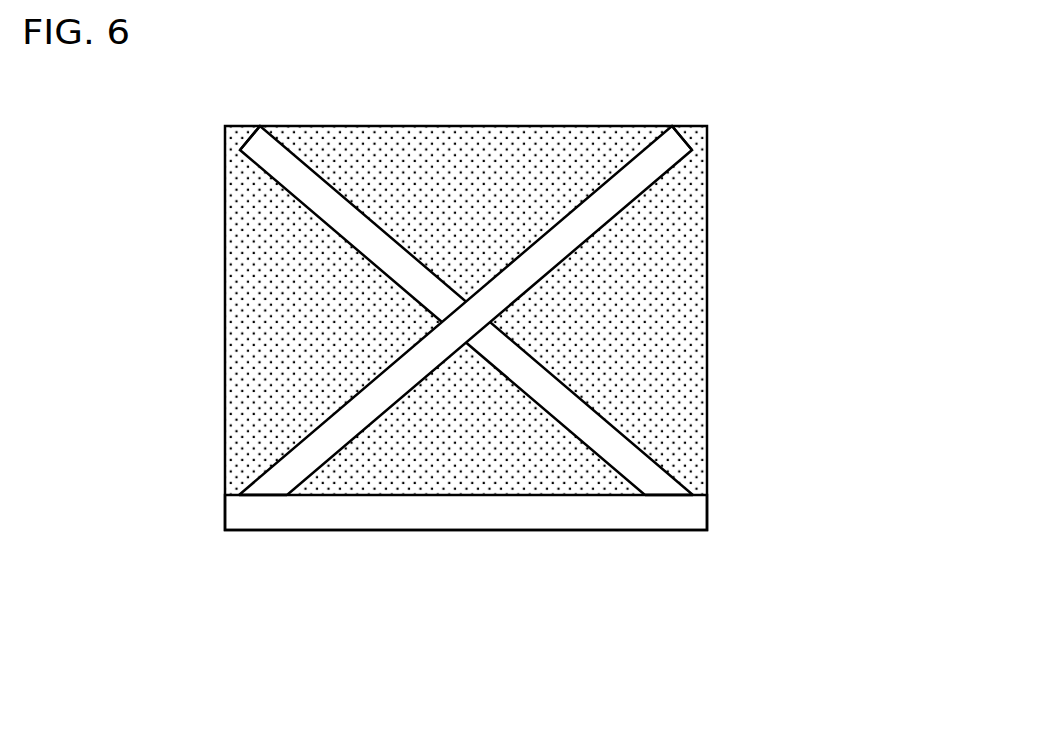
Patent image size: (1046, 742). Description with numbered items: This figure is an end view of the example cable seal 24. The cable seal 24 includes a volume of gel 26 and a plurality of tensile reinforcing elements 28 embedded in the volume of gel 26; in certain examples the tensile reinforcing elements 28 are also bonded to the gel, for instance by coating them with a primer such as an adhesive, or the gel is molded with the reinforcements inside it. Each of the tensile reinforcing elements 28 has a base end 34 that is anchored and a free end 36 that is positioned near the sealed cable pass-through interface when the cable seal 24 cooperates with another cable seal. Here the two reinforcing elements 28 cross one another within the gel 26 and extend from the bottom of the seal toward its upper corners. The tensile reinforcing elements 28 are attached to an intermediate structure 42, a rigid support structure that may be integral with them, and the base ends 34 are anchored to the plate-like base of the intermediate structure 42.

The cable seal 24 is at (529, 85).
The volume of gel 26 is at (270, 310).
The tensile reinforcing elements 28 is at (318, 190).
The base end 34 is at (237, 493).
The free end 36 is at (258, 140).
The intermediate structure 42 is at (632, 512).